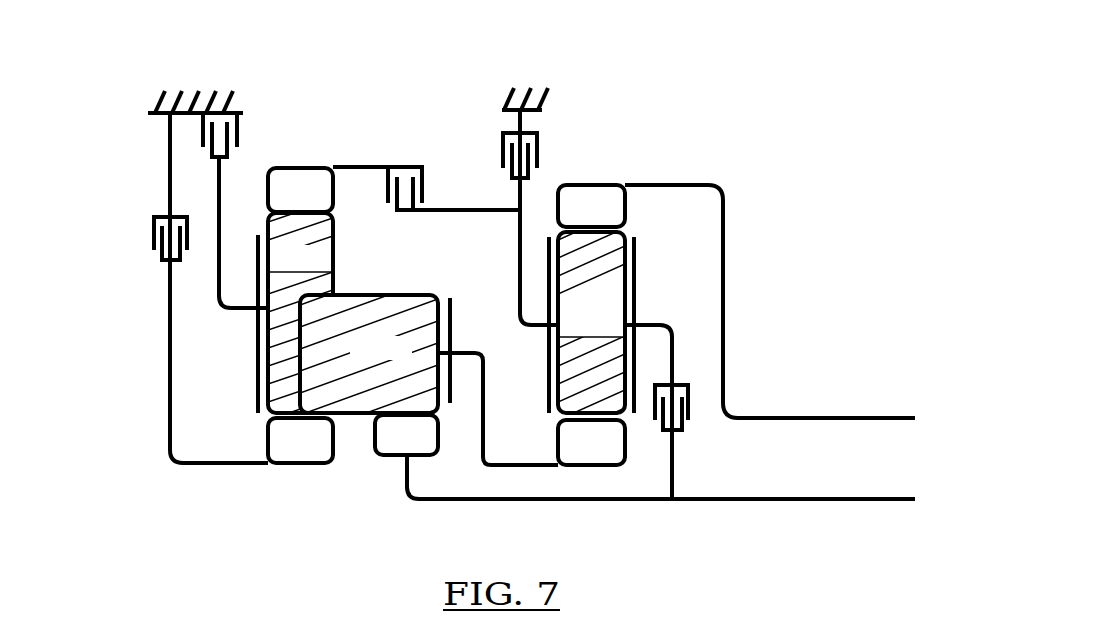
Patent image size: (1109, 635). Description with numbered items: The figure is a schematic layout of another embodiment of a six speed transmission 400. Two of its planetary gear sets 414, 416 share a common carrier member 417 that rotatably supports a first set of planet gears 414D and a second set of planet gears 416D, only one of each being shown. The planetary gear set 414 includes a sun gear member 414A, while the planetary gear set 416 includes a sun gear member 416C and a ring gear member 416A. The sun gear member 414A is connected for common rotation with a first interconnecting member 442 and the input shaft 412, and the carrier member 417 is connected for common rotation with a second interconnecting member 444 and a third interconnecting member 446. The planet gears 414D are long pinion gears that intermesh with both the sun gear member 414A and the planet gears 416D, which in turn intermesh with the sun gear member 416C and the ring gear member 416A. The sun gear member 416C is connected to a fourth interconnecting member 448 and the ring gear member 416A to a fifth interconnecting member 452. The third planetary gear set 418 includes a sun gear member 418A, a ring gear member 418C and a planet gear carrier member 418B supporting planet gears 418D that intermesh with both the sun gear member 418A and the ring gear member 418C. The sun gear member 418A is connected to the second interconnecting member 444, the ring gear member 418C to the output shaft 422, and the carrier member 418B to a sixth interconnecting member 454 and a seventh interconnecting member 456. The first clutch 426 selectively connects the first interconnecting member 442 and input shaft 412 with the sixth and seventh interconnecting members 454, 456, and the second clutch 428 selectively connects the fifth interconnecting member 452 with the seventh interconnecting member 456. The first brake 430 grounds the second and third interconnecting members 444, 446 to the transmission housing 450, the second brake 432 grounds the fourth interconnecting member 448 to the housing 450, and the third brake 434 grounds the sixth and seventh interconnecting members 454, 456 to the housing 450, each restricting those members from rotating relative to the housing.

The six speed transmission 400 is at (754, 78).
The input member or shaft 412 is at (808, 499).
The planetary gear set 414 is at (369, 398).
The sun gear member 414A is at (406, 435).
The first set of planet gears 414D is at (410, 360).
The planetary gear set 416 is at (358, 359).
The ring gear member 416A is at (327, 207).
The sun gear member 416C is at (327, 458).
The second set of planet gears 416D is at (300, 319).
The common carrier member 417 is at (258, 348).
The planetary gear set 418 is at (571, 288).
The sun gear member 418A is at (618, 462).
The planet gear carrier member 418B is at (549, 275).
The ring gear member 418C is at (618, 224).
The planet gears 418D is at (591, 324).
The output member or shaft 422 is at (723, 277).
The first clutch 426 is at (683, 423).
The second clutch 428 is at (388, 185).
The first brake 430 is at (237, 140).
The second brake 432 is at (154, 233).
The third brake 434 is at (503, 150).
The first shaft or interconnecting member 442 is at (598, 499).
The second shaft or interconnecting member 444 is at (483, 440).
The third shaft or interconnecting member 446 is at (219, 190).
The fourth shaft or interconnecting member 448 is at (170, 346).
The transmission housing 450 is at (155, 103).
The fifth shaft or interconnecting member 452 is at (348, 167).
The sixth shaft or interconnecting member 454 is at (672, 353).
The seventh shaft or interconnecting member 456 is at (520, 235).